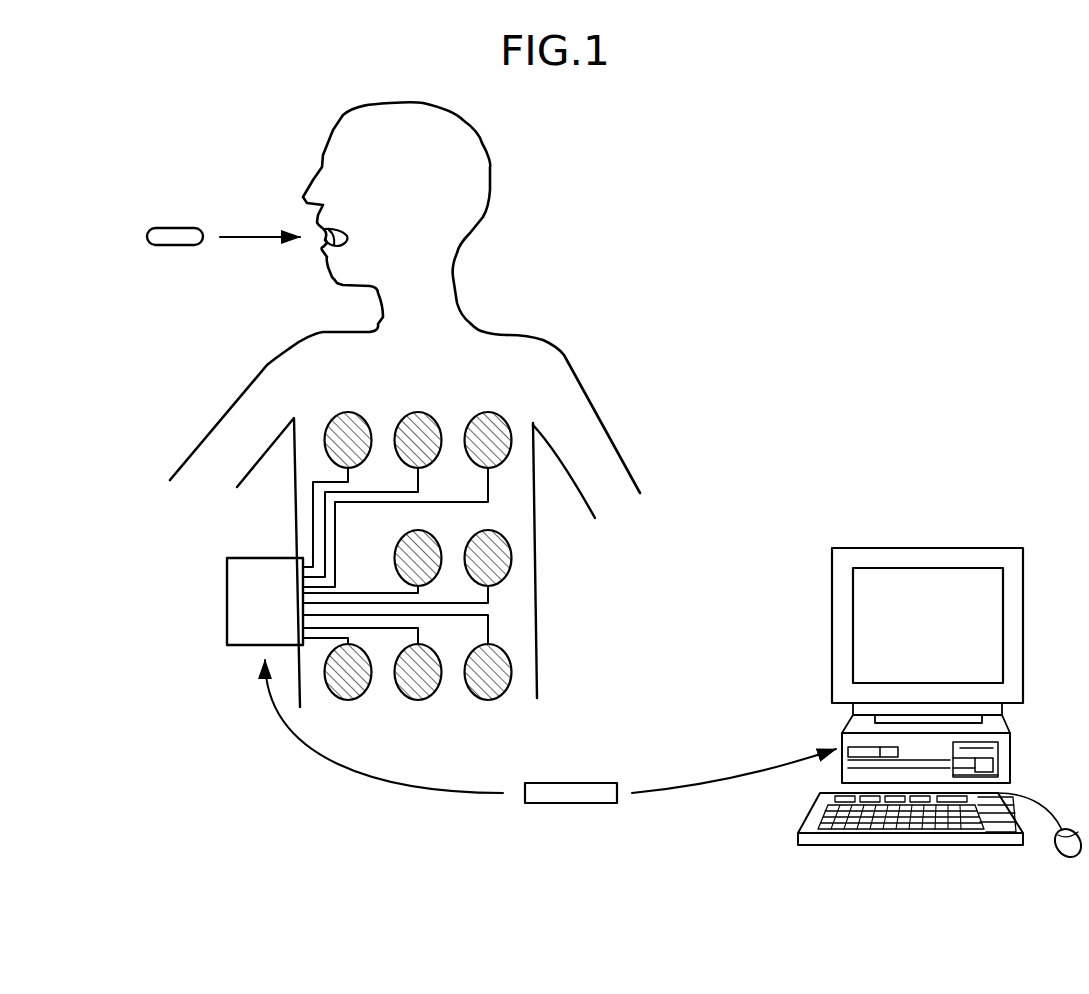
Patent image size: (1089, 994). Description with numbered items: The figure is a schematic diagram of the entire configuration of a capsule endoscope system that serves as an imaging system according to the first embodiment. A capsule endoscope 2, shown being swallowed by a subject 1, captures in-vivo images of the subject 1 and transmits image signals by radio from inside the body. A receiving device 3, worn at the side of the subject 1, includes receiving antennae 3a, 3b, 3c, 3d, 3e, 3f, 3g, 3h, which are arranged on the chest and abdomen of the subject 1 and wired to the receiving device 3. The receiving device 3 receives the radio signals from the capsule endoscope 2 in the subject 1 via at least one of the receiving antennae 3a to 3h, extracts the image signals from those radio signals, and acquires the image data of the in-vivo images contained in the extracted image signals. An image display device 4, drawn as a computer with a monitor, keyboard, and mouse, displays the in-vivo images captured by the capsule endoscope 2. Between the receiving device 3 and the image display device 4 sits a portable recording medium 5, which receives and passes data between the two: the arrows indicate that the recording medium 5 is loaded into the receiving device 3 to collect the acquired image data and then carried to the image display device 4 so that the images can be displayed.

The subject 1 is at (475, 128).
The capsule endoscope 2 is at (175, 228).
The receiving device 3 is at (227, 562).
The receiving antenna 3a is at (327, 423).
The receiving antenna 3b is at (418, 412).
The receiving antenna 3c is at (488, 412).
The receiving antenna 3d is at (436, 520).
The receiving antenna 3e is at (502, 531).
The receiving antenna 3f is at (350, 702).
The receiving antenna 3g is at (420, 702).
The receiving antenna 3h is at (490, 702).
The image display device 4 is at (880, 538).
The portable recording medium 5 is at (565, 803).